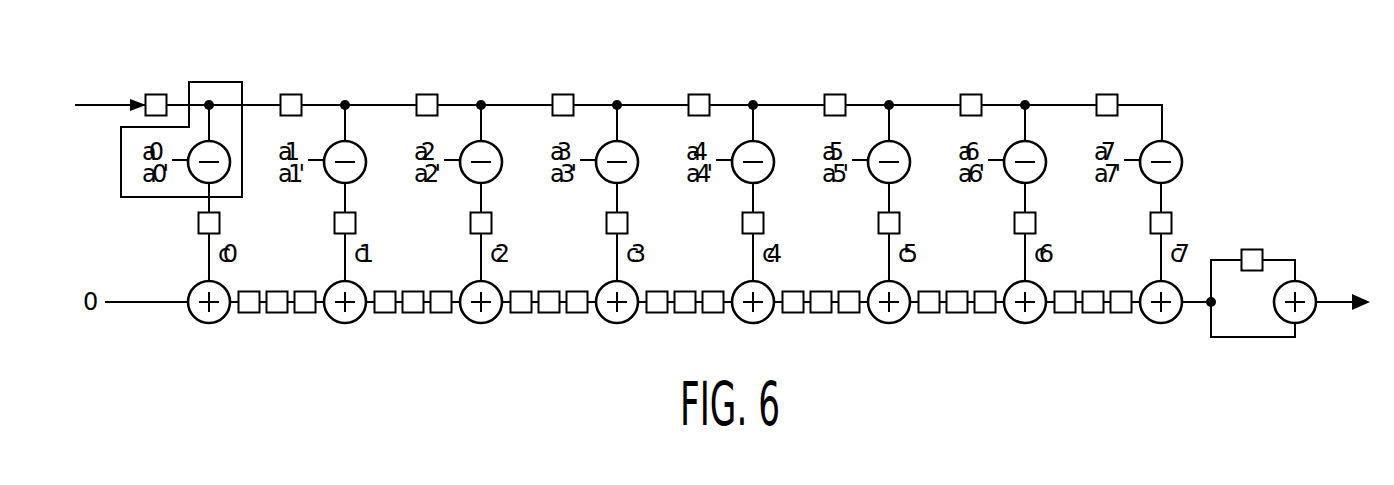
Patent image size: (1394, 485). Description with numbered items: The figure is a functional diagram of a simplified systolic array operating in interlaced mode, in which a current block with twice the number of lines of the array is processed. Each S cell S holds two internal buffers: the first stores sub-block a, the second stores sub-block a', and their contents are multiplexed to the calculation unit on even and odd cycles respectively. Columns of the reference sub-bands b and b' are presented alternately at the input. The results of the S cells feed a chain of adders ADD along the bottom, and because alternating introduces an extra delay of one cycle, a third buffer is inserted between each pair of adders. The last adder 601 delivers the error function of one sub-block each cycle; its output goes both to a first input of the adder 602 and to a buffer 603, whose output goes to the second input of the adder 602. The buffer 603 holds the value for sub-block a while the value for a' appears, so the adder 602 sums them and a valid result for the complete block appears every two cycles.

The last adder 601 is at (1161, 323).
The adder 602 is at (1305, 282).
The buffer 603 is at (1252, 248).
The S cell S is at (121, 175).
The adder ADD is at (189, 294).